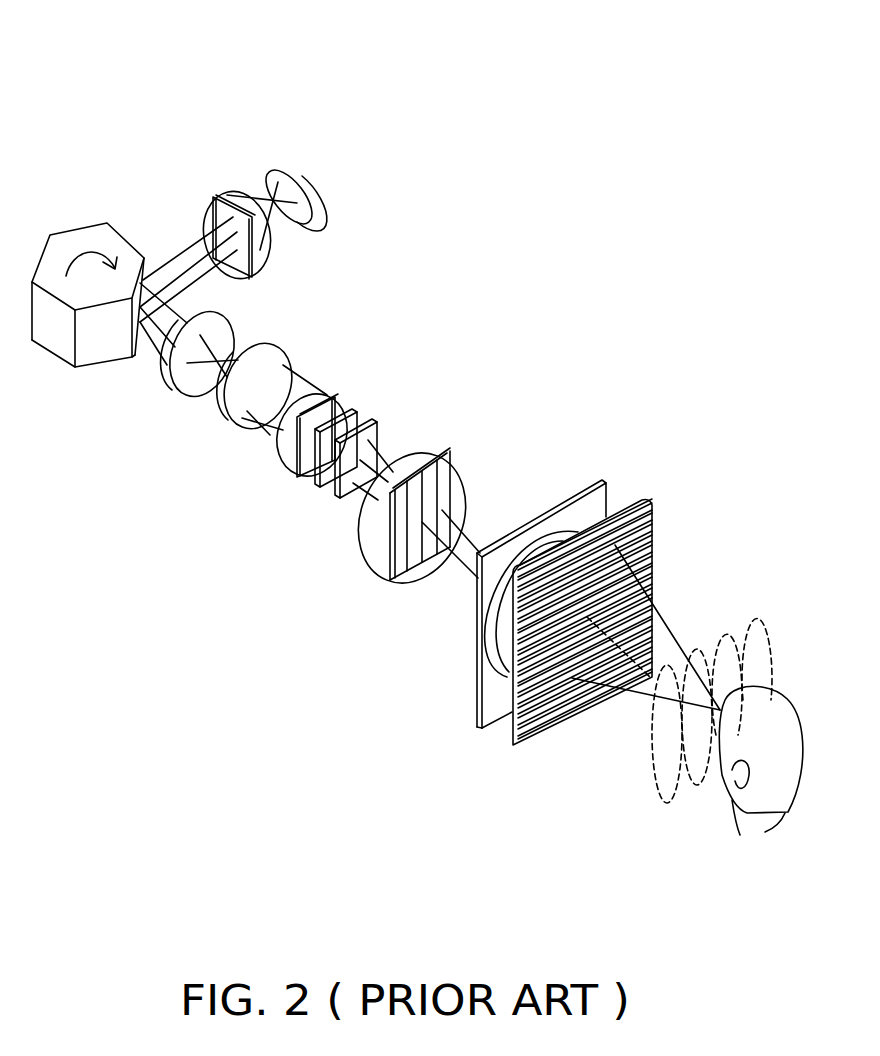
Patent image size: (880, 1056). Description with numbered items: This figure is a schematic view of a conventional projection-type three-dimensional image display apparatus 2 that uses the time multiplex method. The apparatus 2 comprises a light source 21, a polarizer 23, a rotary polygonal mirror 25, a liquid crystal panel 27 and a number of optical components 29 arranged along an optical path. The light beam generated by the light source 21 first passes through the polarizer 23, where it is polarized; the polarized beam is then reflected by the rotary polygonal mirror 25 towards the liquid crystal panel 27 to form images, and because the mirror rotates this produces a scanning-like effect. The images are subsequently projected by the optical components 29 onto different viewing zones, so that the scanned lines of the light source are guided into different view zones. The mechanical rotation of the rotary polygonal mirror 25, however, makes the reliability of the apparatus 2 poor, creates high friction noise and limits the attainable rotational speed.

The projection-type three-dimensional image display apparatus 2 is at (161, 61).
The light source 21 is at (288, 180).
The polarizer 23 is at (224, 193).
The rotary polygonal mirror 25 is at (73, 233).
The liquid crystal panel 27 is at (332, 393).
The optical components 29 is at (682, 506).